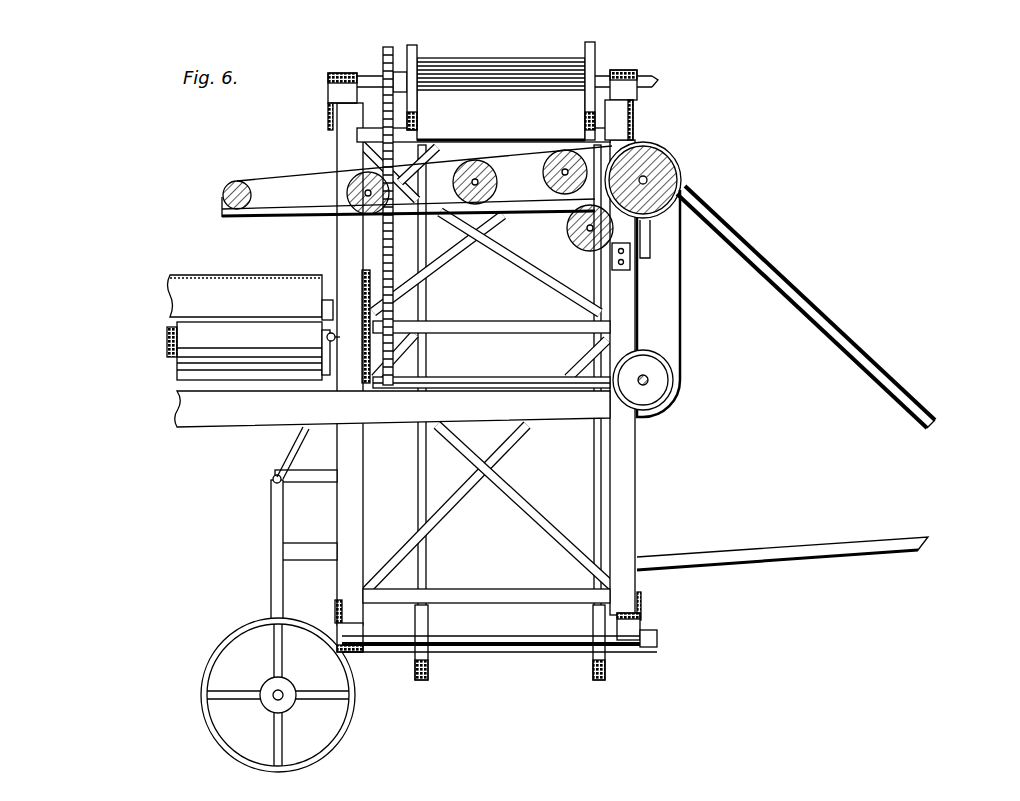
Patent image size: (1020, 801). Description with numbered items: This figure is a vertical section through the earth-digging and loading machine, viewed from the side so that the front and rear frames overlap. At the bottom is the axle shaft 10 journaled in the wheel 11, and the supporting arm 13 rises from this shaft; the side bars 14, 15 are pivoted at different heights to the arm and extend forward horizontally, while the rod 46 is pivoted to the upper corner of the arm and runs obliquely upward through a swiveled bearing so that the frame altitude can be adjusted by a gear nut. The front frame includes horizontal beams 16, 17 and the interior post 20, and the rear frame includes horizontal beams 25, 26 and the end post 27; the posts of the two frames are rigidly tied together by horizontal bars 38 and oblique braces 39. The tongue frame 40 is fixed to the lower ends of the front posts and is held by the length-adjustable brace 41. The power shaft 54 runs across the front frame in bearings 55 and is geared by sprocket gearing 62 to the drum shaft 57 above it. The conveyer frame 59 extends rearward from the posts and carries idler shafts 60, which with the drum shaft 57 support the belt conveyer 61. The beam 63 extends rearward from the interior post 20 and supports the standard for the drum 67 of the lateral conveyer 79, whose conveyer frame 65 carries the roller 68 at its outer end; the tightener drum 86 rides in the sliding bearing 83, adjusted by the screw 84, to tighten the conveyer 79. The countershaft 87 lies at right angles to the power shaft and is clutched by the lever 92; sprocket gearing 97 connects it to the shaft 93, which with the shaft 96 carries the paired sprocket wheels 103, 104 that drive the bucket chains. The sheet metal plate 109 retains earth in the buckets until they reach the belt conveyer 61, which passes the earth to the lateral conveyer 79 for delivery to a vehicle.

The axle shaft 10 is at (275, 695).
The wheel 11 is at (226, 646).
The supporting arm 13 is at (272, 590).
The side bar 14 is at (310, 482).
The side bar 15 is at (304, 550).
The horizontal beam 16 is at (640, 110).
The horizontal beam 17 is at (642, 606).
The interior post 20 is at (622, 377).
The horizontal beam 25 is at (327, 108).
The horizontal beam 26 is at (335, 612).
The end post 27 is at (350, 364).
The horizontal bar 38 is at (410, 139).
The oblique brace 39 is at (505, 247).
The tongue frame 40 is at (795, 548).
The brace 41 is at (770, 265).
The rod 46 is at (292, 443).
The power shaft 54 is at (650, 380).
The bearing 55 is at (650, 390).
The drum shaft 57 is at (682, 170).
The conveyer frame 59 is at (250, 212).
The idler shaft 60 is at (247, 193).
The belt conveyer 61 is at (292, 178).
The sprocket gearing 62 is at (682, 290).
The beam 63 is at (392, 409).
The conveyer frame 65 is at (322, 308).
The drum 67 is at (245, 296).
The roller 68 is at (362, 286).
The conveyer 79 is at (252, 278).
The bearing 83 is at (322, 346).
The screw 84 is at (345, 337).
The tightener drum 86 is at (244, 351).
The countershaft 87 is at (490, 377).
The lever 92 is at (650, 240).
The shaft 93 is at (367, 73).
The shaft 96 is at (505, 638).
The sprocket gearing 97 is at (388, 47).
The sprocket wheel 103 is at (592, 42).
The sprocket wheel 104 is at (414, 52).
The sheet metal plate 109 is at (501, 321).